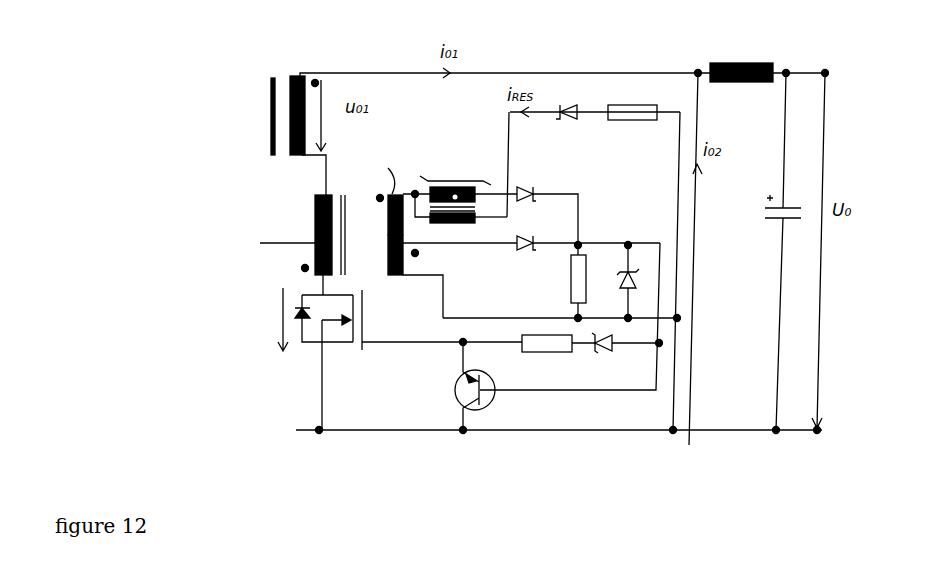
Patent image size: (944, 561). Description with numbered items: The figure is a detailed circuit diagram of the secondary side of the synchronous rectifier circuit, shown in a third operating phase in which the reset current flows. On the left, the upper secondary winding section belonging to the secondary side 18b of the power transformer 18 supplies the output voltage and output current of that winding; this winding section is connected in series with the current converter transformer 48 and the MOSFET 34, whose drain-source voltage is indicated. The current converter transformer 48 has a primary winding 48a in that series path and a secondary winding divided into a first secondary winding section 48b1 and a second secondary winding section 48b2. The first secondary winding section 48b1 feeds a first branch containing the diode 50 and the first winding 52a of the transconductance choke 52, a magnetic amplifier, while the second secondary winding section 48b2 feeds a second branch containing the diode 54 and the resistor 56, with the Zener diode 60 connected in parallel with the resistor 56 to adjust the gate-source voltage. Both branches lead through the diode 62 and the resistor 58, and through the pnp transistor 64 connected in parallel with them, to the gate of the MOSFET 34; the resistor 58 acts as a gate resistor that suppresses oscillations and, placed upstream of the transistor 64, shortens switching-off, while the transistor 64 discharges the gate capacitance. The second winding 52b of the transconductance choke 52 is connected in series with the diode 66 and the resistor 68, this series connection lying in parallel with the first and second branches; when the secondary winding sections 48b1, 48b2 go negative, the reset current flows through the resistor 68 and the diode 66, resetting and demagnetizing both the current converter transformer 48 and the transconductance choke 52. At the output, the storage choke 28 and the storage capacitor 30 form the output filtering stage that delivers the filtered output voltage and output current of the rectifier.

The power transformer 18 is at (261, 61).
The secondary side of the power transformer 18b is at (301, 76).
The storage choke 28 is at (762, 63).
The storage capacitor 30 is at (808, 134).
The MOSFET 34 is at (307, 330).
The current converter transformer 48 is at (358, 154).
The primary winding 48a is at (278, 235).
The first secondary winding section 48b1 is at (392, 190).
The second secondary winding section 48b2 is at (436, 276).
The diode 50 is at (536, 177).
The transconductance choke 52 is at (444, 148).
The first winding 52a is at (474, 187).
The second winding 52b is at (445, 224).
The diode 54 is at (511, 279).
The resistor 56 is at (580, 264).
The resistor 58 is at (563, 344).
The Zener diode 60 is at (638, 282).
The diode 62 is at (603, 346).
The transistor 64 is at (455, 388).
The diode 66 is at (568, 103).
The resistor 68 is at (630, 104).